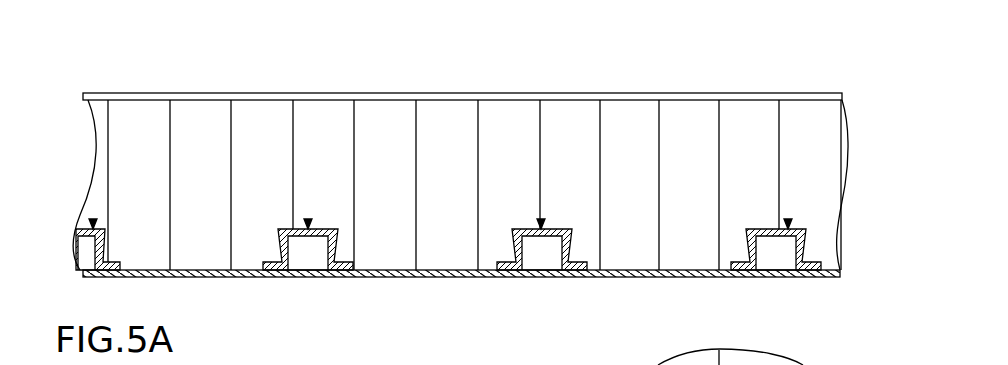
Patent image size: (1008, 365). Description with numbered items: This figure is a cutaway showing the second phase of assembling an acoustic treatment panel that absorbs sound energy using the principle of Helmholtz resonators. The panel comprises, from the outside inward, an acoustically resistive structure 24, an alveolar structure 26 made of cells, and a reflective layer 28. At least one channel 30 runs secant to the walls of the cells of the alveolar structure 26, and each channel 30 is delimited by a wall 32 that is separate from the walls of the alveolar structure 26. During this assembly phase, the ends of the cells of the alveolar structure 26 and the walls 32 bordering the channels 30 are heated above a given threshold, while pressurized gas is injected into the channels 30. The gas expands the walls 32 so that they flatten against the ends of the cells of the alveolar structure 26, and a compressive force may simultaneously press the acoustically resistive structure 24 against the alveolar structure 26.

The acoustically resistive structure 24 is at (216, 277).
The alveolar structure 26 is at (386, 125).
The reflective layer 28 is at (230, 93).
The channel 30 is at (316, 270).
The wall 32 is at (93, 224).